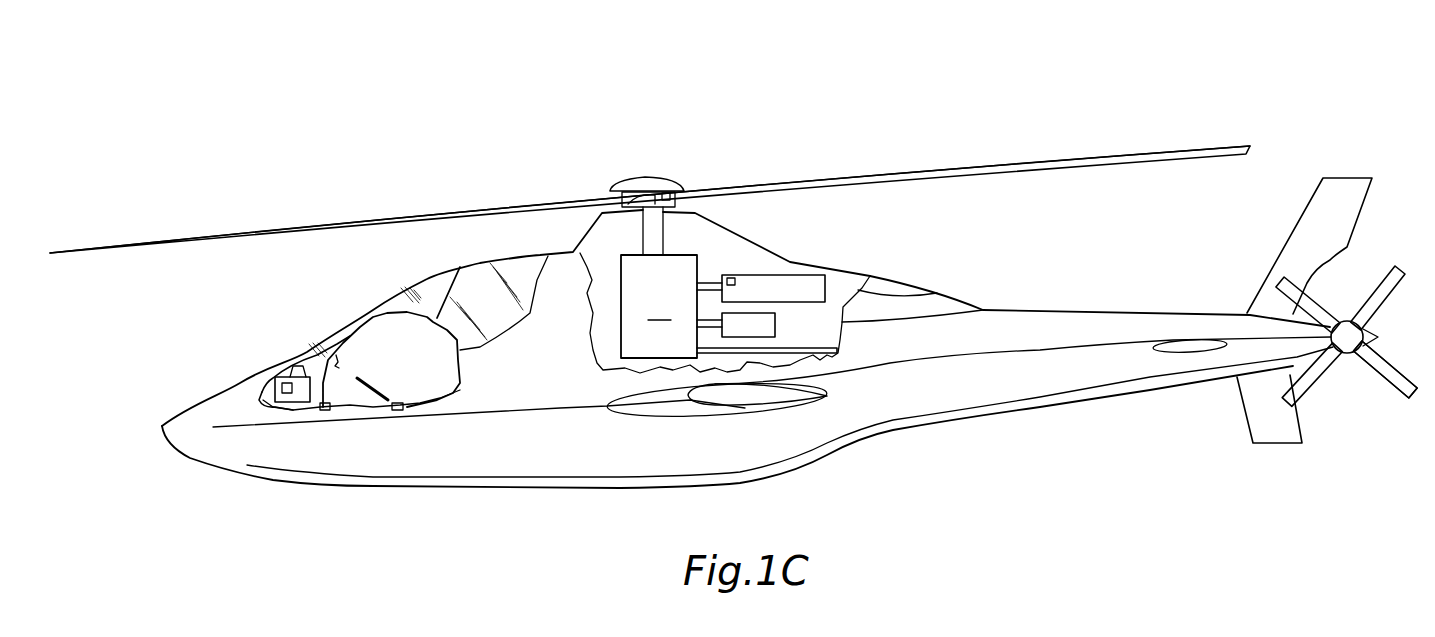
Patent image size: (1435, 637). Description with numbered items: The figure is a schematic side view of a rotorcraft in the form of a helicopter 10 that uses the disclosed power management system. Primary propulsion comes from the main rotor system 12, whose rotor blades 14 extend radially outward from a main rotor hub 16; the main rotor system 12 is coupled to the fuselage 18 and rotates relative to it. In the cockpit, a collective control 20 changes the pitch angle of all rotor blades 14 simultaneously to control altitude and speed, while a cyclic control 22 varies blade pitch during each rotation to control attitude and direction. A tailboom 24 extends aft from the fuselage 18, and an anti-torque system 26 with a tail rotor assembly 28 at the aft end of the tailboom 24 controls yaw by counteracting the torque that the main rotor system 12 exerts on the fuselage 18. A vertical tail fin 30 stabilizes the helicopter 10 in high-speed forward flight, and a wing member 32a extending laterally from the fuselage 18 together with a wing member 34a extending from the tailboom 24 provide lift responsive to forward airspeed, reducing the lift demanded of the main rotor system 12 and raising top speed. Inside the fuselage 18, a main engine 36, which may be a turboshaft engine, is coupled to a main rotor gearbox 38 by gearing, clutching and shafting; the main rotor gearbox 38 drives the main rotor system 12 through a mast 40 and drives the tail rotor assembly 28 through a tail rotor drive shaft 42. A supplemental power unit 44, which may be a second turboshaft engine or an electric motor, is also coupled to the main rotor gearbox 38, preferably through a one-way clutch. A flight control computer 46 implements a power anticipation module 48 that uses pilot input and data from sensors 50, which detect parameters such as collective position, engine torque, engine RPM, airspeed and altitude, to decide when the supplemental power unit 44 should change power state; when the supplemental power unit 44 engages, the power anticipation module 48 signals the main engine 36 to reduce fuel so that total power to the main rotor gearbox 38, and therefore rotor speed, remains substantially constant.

The helicopter 10 is at (843, 120).
The main rotor system 12 is at (768, 178).
The rotor blades 14 is at (452, 212).
The main rotor hub 16 is at (650, 177).
The fuselage 18 is at (480, 458).
The collective control 20 is at (372, 388).
The cyclic control 22 is at (338, 355).
The tailboom 24 is at (1016, 390).
The anti-torque system 26 is at (1384, 279).
The tail rotor assembly 28 is at (1387, 380).
The vertical tail fin 30 is at (1323, 191).
The wing member 32a is at (656, 412).
The wing member 34a is at (1177, 352).
The main engine 36 is at (808, 279).
The main rotor gearbox 38 is at (659, 306).
The mast 40 is at (648, 243).
The tail rotor drive shaft 42 is at (822, 356).
The supplemental power unit 44 is at (745, 328).
The flight control computer 46 is at (292, 382).
The power anticipation module 48 is at (278, 391).
The sensors 50 is at (688, 192).